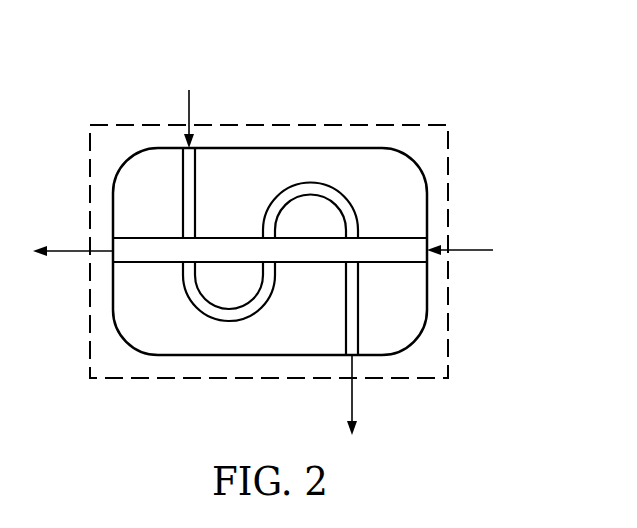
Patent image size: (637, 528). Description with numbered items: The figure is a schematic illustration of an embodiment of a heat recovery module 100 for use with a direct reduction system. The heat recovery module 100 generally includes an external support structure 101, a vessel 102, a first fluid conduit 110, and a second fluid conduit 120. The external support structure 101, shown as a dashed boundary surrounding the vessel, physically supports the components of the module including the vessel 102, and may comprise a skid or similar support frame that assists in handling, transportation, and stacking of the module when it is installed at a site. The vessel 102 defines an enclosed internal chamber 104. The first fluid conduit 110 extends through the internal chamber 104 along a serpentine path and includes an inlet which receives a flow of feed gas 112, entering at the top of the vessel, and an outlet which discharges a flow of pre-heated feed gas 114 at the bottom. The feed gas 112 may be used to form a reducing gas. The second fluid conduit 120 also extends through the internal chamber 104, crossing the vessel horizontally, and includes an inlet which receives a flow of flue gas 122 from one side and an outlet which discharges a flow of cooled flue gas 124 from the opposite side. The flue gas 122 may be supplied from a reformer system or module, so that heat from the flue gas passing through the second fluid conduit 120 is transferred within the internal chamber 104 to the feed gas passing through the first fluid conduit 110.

The heat recovery module 100 is at (203, 55).
The external support structure 101 is at (78, 325).
The vessel 102 is at (190, 356).
The internal chamber 104 is at (368, 160).
The first fluid conduit 110 is at (197, 182).
The feed gas 112 is at (186, 108).
The pre-heated feed gas 114 is at (353, 395).
The second fluid conduit 120 is at (378, 237).
The flue gas 122 is at (472, 250).
The cooled flue gas 124 is at (68, 250).